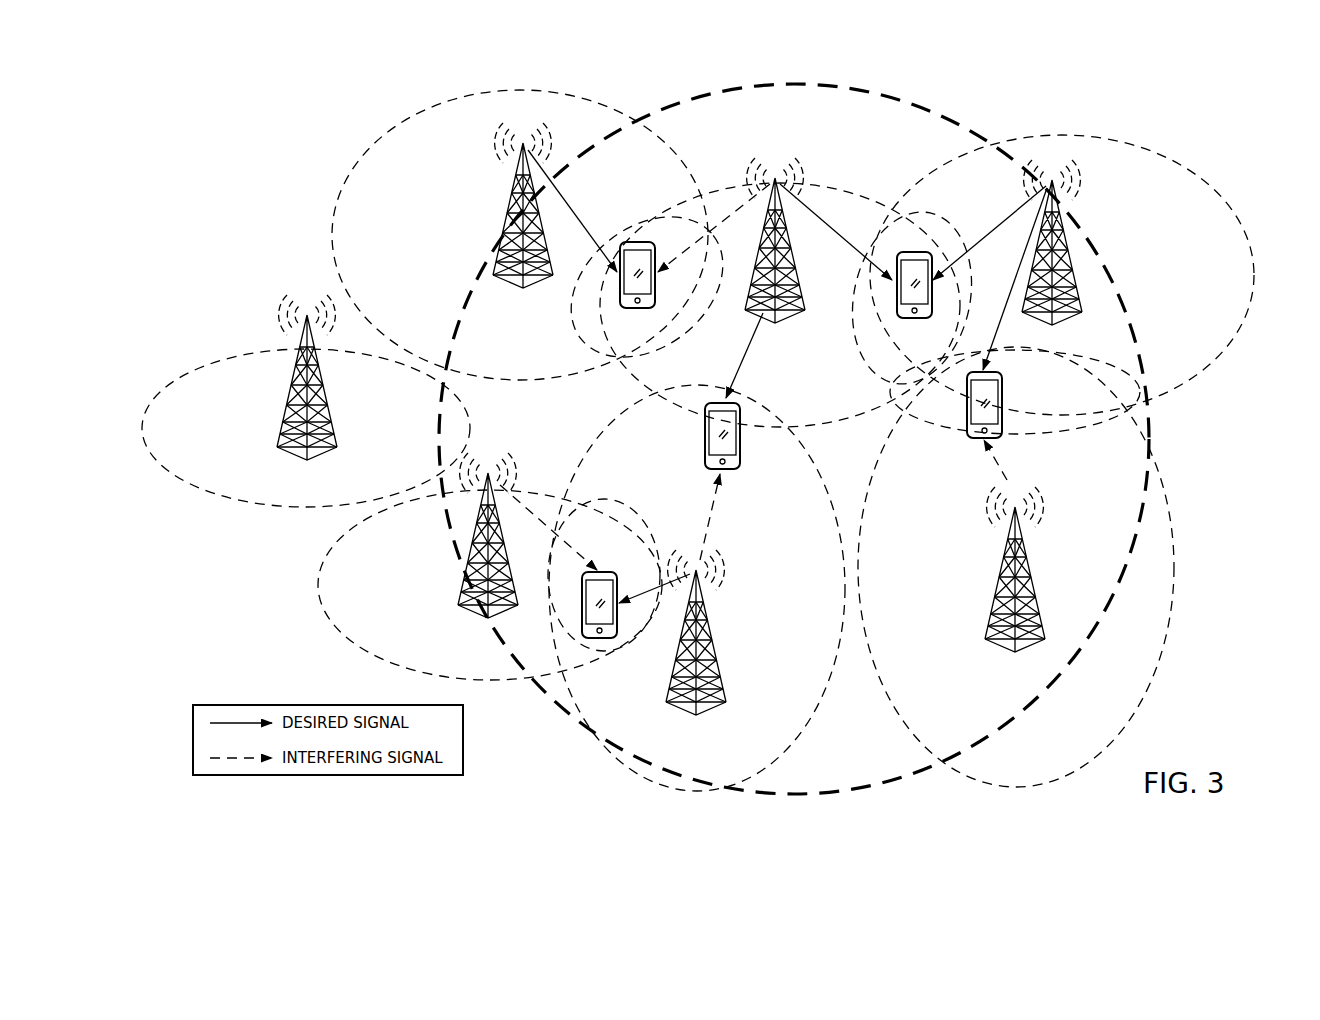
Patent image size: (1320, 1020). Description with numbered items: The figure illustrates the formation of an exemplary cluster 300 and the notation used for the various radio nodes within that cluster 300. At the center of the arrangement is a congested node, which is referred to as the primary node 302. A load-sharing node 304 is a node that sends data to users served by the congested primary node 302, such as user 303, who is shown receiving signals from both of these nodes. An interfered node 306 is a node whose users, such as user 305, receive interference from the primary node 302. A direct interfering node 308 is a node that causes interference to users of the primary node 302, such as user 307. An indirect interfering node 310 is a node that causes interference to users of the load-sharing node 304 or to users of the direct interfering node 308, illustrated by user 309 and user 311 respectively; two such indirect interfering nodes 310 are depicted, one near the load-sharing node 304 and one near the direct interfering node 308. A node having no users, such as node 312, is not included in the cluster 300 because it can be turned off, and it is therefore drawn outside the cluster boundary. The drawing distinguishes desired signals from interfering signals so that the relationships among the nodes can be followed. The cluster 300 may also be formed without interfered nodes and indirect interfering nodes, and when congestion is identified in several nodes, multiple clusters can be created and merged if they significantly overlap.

The cluster 300 is at (262, 140).
The primary node 302 is at (788, 317).
The user 303 is at (912, 318).
The load-sharing node 304 is at (1078, 280).
The user 305 is at (635, 308).
The interfered node 306 is at (500, 227).
The user 307 is at (705, 436).
The direct interfering node 308 is at (720, 677).
The user 309 is at (1000, 403).
The indirect interfering node 310 is at (467, 555).
The user 311 is at (602, 571).
The node 312 is at (285, 402).